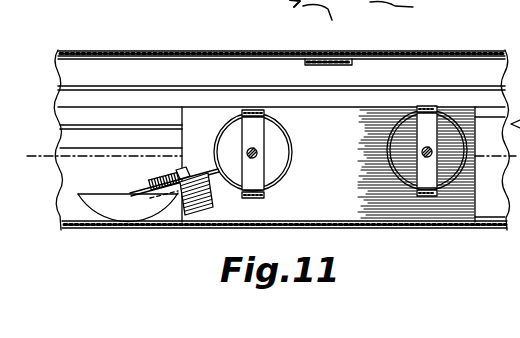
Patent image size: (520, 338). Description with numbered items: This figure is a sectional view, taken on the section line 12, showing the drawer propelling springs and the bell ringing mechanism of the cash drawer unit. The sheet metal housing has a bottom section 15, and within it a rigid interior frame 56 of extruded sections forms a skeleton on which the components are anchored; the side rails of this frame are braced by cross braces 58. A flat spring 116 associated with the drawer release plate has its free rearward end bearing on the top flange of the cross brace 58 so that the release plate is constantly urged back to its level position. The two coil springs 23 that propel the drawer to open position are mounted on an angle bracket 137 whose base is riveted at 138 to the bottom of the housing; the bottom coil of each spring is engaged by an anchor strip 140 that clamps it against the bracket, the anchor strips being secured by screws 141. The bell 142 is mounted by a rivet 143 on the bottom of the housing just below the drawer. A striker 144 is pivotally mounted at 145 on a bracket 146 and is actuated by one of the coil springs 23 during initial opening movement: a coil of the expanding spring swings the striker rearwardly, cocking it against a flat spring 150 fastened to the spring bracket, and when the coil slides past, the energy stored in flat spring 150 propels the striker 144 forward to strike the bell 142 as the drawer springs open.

The section line 12 is at (42, 178).
The bottom section 15 is at (420, 228).
The coil springs 23 is at (277, 182).
The interior frame 56 is at (60, 97).
The cross braces 58 is at (412, 52).
The flat spring 116 is at (328, 58).
The angle bracket 137 is at (360, 125).
The rivet 138 is at (232, 222).
The anchor strips 140 is at (256, 133).
The screws 141 is at (257, 153).
The bell 142 is at (100, 196).
The rivet 143 is at (126, 230).
The striker 144 is at (207, 172).
The pivot 145 is at (173, 168).
The bracket 146 is at (195, 218).
The flat spring 150 is at (158, 180).